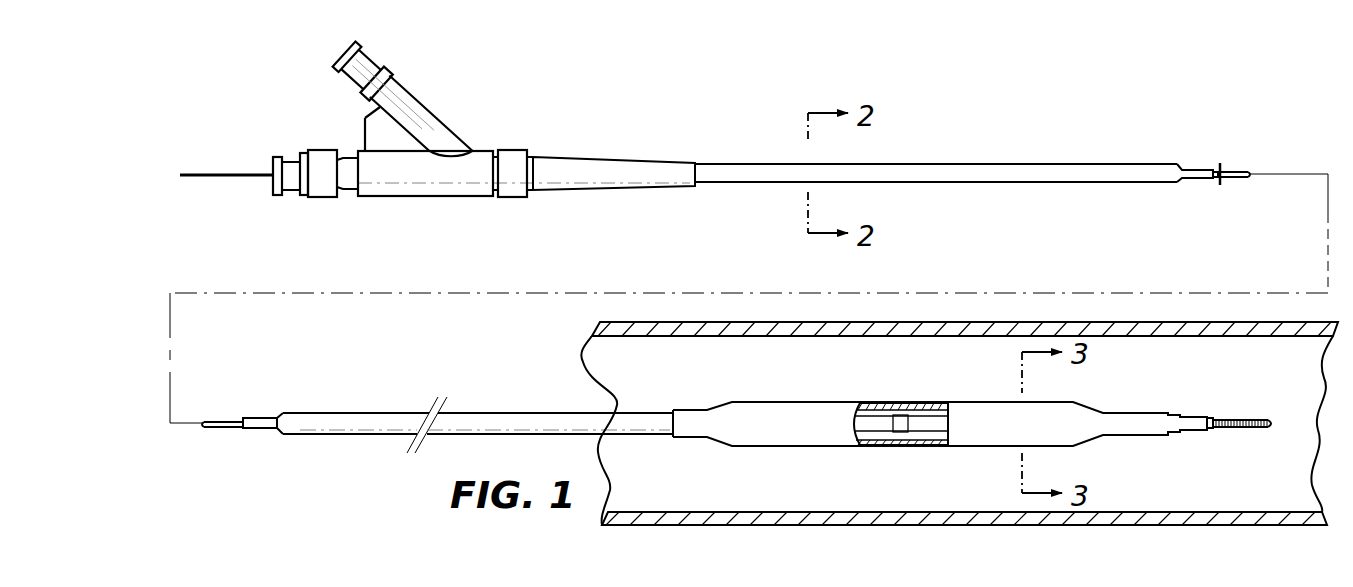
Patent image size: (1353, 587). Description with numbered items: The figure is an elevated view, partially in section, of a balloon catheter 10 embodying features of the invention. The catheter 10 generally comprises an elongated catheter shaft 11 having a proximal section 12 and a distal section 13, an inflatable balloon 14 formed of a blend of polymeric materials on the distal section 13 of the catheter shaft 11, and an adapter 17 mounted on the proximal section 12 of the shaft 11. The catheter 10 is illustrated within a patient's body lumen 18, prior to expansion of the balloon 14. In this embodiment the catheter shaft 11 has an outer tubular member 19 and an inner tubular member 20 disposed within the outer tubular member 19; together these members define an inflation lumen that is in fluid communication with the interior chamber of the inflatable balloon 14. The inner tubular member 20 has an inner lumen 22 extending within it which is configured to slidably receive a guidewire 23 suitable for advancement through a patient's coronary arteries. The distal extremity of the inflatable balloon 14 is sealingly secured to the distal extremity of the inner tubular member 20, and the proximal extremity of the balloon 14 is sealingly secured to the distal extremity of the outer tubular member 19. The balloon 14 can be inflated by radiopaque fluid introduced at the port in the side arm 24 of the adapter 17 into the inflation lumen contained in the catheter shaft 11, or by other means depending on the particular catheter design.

The catheter 10 is at (994, 100).
The catheter shaft 11 is at (975, 182).
The proximal section 12 is at (737, 163).
The distal section 13 is at (558, 413).
The inflatable balloon 14 is at (743, 400).
The adapter 17 is at (362, 151).
The body lumen 18 is at (632, 322).
The outer tubular member 19 is at (1098, 173).
The inner tubular member 20 is at (1197, 170).
The inner lumen 22 is at (1217, 430).
The guidewire 23 is at (228, 173).
The side arm 24 is at (437, 112).